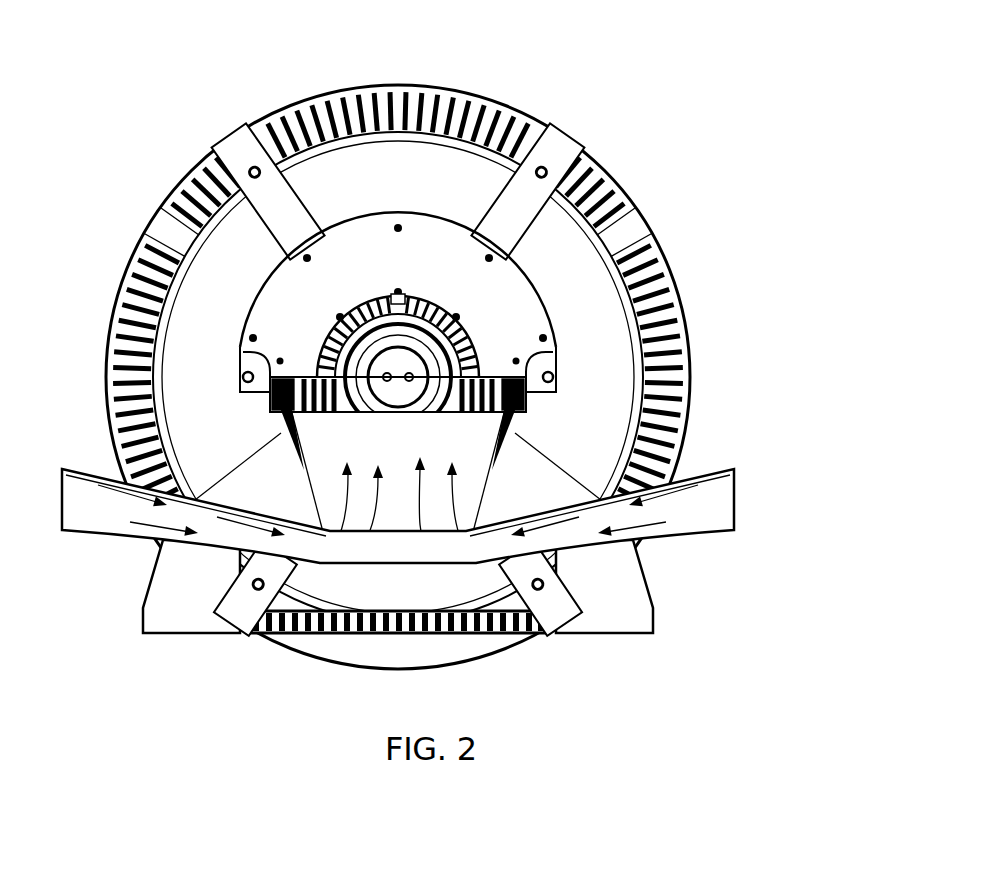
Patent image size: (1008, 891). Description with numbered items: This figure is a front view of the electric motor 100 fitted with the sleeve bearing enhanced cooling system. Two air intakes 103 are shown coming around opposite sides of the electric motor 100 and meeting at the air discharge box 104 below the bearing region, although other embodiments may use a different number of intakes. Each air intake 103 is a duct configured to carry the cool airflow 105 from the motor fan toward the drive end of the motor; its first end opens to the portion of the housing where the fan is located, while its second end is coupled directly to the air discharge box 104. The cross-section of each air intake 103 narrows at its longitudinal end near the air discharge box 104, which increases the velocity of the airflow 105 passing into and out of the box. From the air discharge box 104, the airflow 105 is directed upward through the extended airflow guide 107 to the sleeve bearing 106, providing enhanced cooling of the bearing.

The electric motor 100 is at (462, 341).
The air intake 103 is at (105, 517).
The air discharge box 104 is at (340, 576).
The cool airflow 105 is at (700, 506).
The sleeve bearing 106 is at (480, 373).
The airflow guide 107 is at (387, 488).